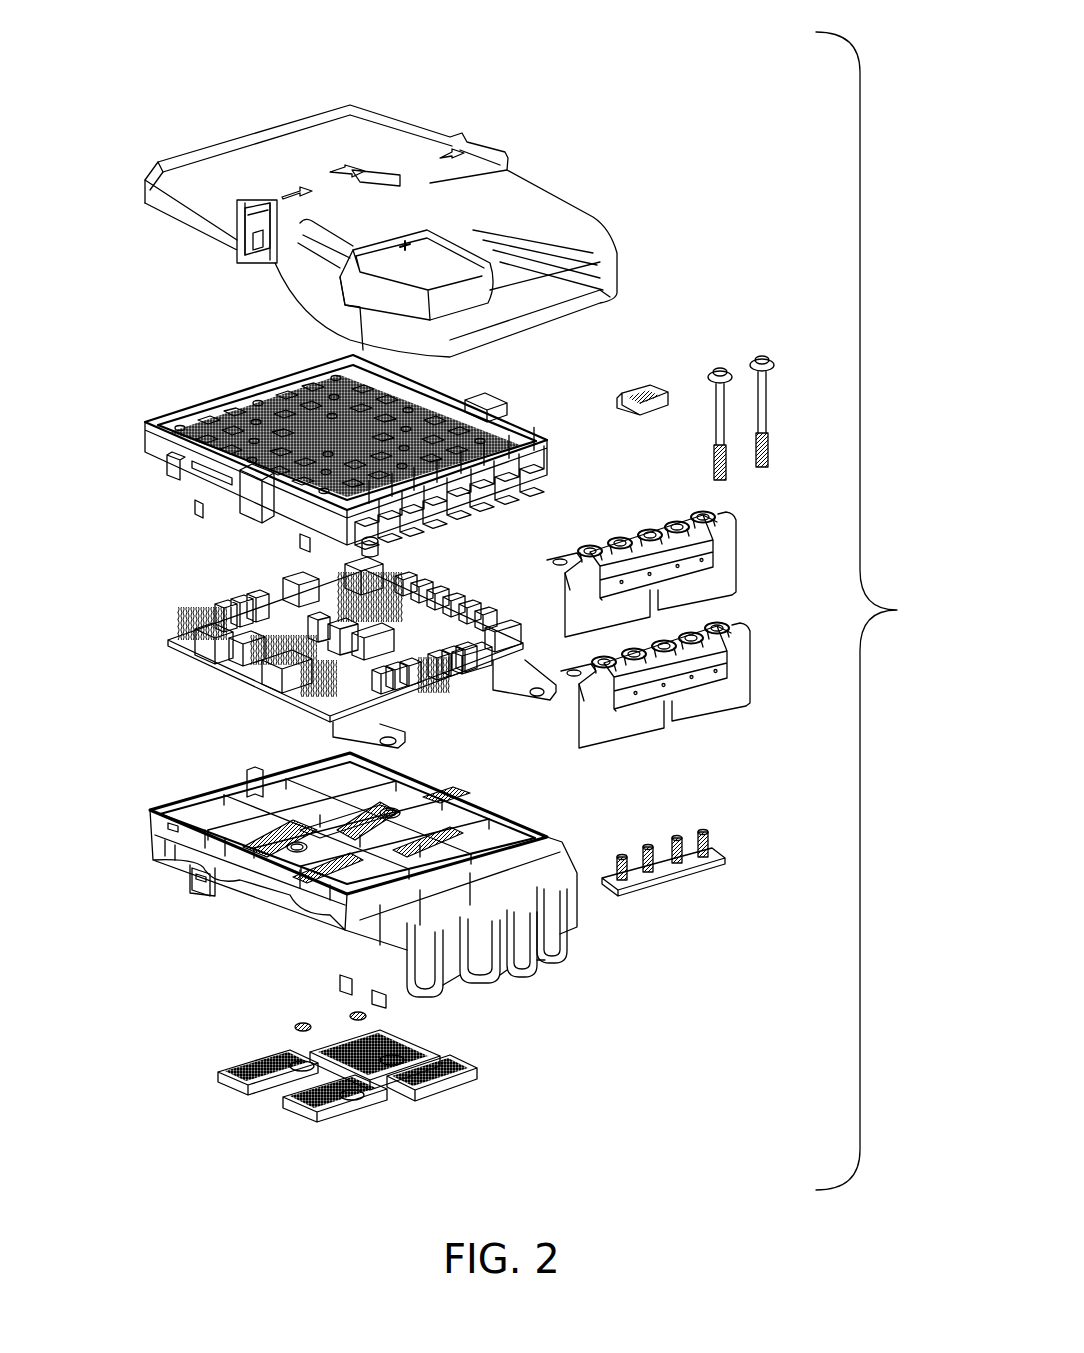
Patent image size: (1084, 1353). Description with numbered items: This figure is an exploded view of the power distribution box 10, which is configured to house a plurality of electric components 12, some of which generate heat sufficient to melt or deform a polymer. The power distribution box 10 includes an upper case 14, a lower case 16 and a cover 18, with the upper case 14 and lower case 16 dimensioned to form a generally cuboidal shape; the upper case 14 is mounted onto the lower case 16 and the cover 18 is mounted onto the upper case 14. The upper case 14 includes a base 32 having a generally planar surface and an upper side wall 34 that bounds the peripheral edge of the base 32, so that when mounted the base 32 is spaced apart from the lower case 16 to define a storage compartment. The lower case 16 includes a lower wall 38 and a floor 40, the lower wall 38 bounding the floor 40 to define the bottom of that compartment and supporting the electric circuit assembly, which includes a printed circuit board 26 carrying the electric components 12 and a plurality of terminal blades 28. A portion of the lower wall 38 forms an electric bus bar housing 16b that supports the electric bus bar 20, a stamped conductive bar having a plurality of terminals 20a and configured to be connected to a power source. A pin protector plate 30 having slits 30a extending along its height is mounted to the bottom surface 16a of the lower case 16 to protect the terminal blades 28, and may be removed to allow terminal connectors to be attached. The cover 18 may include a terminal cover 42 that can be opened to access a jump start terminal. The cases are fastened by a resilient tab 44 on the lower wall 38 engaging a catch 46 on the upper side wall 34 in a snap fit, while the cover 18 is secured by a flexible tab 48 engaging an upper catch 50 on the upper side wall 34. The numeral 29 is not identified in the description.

The power distribution box 10 is at (873, 611).
The electric components 12 is at (321, 647).
The upper case 14 is at (130, 441).
The lower case 16 is at (368, 878).
The bottom surface 16a is at (285, 925).
The electric bus bar housing 16b is at (580, 964).
The cover 18 is at (548, 165).
The electric bus bar 20 is at (746, 555).
The terminals 20a is at (725, 520).
The printed circuit board 26 is at (196, 662).
The terminal blades 28 is at (527, 682).
The electronic components 29 is at (177, 608).
The pin protector plate 30 is at (450, 1105).
The slits 30a is at (447, 1060).
The base 32 is at (490, 430).
The upper side wall 34 is at (210, 500).
The lower wall 38 is at (160, 855).
The floor 40 is at (430, 800).
The terminal cover 42 is at (465, 265).
The resilient tab 44 is at (192, 890).
The catch 46 is at (165, 478).
The flexible tab 48 is at (258, 252).
The upper catch 50 is at (260, 505).